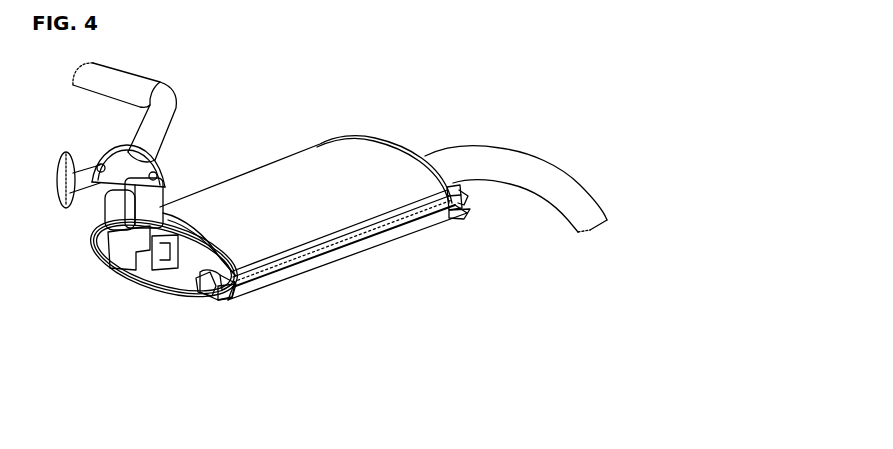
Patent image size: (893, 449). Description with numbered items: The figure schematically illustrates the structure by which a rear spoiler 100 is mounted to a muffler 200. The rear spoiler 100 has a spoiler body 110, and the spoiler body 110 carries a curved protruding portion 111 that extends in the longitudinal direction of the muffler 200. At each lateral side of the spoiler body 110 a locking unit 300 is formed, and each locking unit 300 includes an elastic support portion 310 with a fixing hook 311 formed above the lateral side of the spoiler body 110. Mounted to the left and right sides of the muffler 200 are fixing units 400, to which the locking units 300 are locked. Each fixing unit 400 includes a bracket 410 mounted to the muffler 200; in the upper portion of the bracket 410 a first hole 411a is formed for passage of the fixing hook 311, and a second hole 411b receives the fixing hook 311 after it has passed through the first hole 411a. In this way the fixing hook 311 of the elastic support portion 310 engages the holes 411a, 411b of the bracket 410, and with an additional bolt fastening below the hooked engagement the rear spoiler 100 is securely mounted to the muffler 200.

The rear spoiler 100 is at (313, 218).
The spoiler body 110 is at (340, 239).
The curved protruding portion 111 is at (378, 247).
The muffler 200 is at (345, 168).
The locking unit 300 is at (403, 240).
The elastic support portion 310 is at (455, 200).
The fixing hook 311 is at (463, 192).
The fixing unit 400 is at (163, 249).
The bracket 410 is at (150, 294).
The first hole 411a is at (223, 286).
The second hole 411b is at (169, 320).